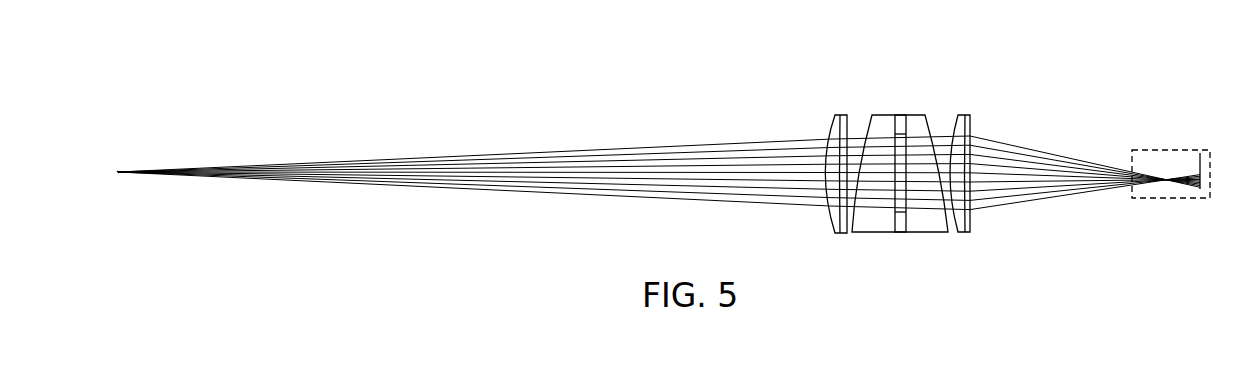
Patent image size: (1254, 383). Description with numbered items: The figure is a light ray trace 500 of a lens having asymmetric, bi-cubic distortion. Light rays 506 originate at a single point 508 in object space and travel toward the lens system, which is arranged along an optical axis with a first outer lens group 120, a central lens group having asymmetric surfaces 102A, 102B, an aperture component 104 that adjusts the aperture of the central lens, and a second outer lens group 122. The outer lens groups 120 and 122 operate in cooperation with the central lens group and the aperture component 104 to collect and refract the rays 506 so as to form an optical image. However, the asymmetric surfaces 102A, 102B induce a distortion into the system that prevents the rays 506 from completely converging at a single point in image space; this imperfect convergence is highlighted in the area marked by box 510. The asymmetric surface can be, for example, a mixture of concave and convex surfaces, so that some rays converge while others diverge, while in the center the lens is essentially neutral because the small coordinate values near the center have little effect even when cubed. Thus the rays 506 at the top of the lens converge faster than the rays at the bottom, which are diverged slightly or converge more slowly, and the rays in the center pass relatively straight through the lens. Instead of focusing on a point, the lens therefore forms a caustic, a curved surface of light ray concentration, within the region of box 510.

The light ray trace 500 is at (1020, 89).
The point in object space 508 is at (118, 170).
The rays 506 is at (440, 157).
The outer lens group 120 is at (841, 234).
The asymmetric surface 102A is at (884, 115).
The asymmetric surface 102B is at (923, 233).
The aperture component 104 is at (900, 115).
The outer lens group 122 is at (964, 115).
The box 510 is at (1172, 148).